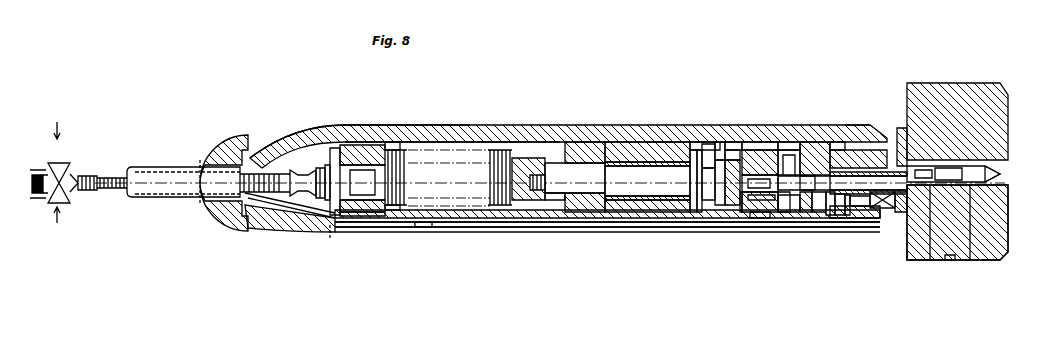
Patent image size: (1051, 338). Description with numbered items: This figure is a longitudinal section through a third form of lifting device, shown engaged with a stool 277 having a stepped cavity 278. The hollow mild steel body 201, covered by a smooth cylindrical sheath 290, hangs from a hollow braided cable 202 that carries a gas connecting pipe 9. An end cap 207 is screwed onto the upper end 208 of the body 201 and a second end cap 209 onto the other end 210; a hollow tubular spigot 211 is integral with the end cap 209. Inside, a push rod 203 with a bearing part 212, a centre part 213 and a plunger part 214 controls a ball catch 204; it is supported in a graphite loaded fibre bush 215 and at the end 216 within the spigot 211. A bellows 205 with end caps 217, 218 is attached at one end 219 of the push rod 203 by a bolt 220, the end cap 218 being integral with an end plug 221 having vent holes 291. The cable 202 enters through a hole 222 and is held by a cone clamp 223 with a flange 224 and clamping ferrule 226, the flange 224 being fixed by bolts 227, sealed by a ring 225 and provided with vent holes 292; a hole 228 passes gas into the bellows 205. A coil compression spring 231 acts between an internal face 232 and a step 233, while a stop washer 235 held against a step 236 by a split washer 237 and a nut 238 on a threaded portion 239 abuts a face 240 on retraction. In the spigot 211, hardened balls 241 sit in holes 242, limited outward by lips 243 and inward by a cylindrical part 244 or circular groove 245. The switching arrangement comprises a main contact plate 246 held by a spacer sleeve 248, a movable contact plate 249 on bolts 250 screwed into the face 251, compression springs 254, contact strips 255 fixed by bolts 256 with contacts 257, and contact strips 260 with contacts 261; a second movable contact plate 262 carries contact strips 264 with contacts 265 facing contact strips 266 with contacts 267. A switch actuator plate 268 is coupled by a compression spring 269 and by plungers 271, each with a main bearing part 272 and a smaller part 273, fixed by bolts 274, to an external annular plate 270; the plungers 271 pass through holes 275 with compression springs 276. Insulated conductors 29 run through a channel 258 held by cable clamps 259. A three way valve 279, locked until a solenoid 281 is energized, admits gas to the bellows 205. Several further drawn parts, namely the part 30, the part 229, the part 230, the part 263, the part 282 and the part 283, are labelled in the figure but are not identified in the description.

The gas connecting pipe 9 is at (140, 176).
The P.T.F.E. insulated conductors 29 is at (212, 210).
The nose upper part 30 is at (258, 160).
The body 201 is at (478, 127).
The hollow braided cable 202 is at (162, 167).
The push rod 203 is at (630, 213).
The ball catch 204 is at (957, 162).
The operating bellows 205 is at (406, 181).
The end cap 207 is at (298, 130).
The upper end of body 208 is at (362, 126).
The second end cap 209 is at (878, 140).
The other end of body 210 is at (852, 126).
The hollow tubular spigot 211 is at (1002, 177).
The bearing part 212 is at (575, 178).
The centre part 213 is at (694, 148).
The plunger part 214 is at (832, 141).
The graphite loaded fibre bush 215 is at (585, 141).
The end of plunger part 216 is at (925, 176).
The bellows end cap 217 is at (528, 157).
The bellows end cap 218 is at (380, 218).
The end of push rod 219 is at (556, 195).
The bolt 220 is at (551, 179).
The end plug 221 is at (326, 160).
The hole 222 is at (205, 168).
The cone clamp 223 is at (318, 214).
The flange 224 is at (337, 146).
The ring 225 is at (406, 160).
The clamping ferrule 226 is at (300, 173).
The bolts 227 is at (322, 165).
The hole 228 is at (362, 178).
The tube 229 is at (450, 233).
The sleeve 230 is at (690, 178).
The coil compression spring 231 is at (630, 141).
The internal face 232 is at (657, 200).
The step 233 is at (647, 181).
The washer 235 is at (699, 214).
The step 236 is at (691, 200).
The split washer 237 is at (727, 142).
The nut 238 is at (711, 156).
The threaded portion 239 is at (718, 158).
The face 240 is at (716, 145).
The hardened balls 241 is at (945, 168).
The holes 242 is at (900, 130).
The lips 243 is at (960, 168).
The cylindrical part 244 is at (942, 186).
The circular groove 245 is at (914, 262).
The main contact plate 246 is at (786, 141).
The spacer sleeve 248 is at (812, 141).
The movable contact plate 249 is at (735, 207).
The bolts 250 is at (745, 141).
The face 251 is at (770, 215).
The compression springs 254 is at (755, 149).
The contact strips 255 is at (760, 220).
The bolts 256 is at (745, 213).
The contacts 257 is at (785, 214).
The channel 258 is at (476, 229).
The cable clamps 259 is at (420, 229).
The contact strips 260 is at (728, 207).
The contacts 261 is at (706, 190).
The second movable contact plate 262 is at (790, 214).
The stem 263 is at (790, 149).
The contact strips 264 is at (806, 214).
The contacts 265 is at (816, 181).
The contact strips 266 is at (760, 182).
The contacts 267 is at (804, 181).
The switch actuator plate 268 is at (830, 217).
The compression spring 269 is at (818, 214).
The external annular plate 270 is at (900, 214).
The plungers 271 is at (858, 208).
The main bearing part 272 is at (884, 210).
The smaller part 273 is at (847, 217).
The bolts 274 is at (838, 217).
The holes 275 is at (872, 220).
The compression spring 276 is at (868, 183).
The stool 277 is at (957, 239).
The stepped cavity 278 is at (972, 186).
The three way valve 279 is at (66, 172).
The solenoid 281 is at (42, 172).
The edge 282 is at (907, 252).
The passage 283 is at (946, 262).
The cylindrical sheath 290 is at (508, 127).
The vent holes 291 is at (388, 141).
The vent holes 292 is at (328, 242).